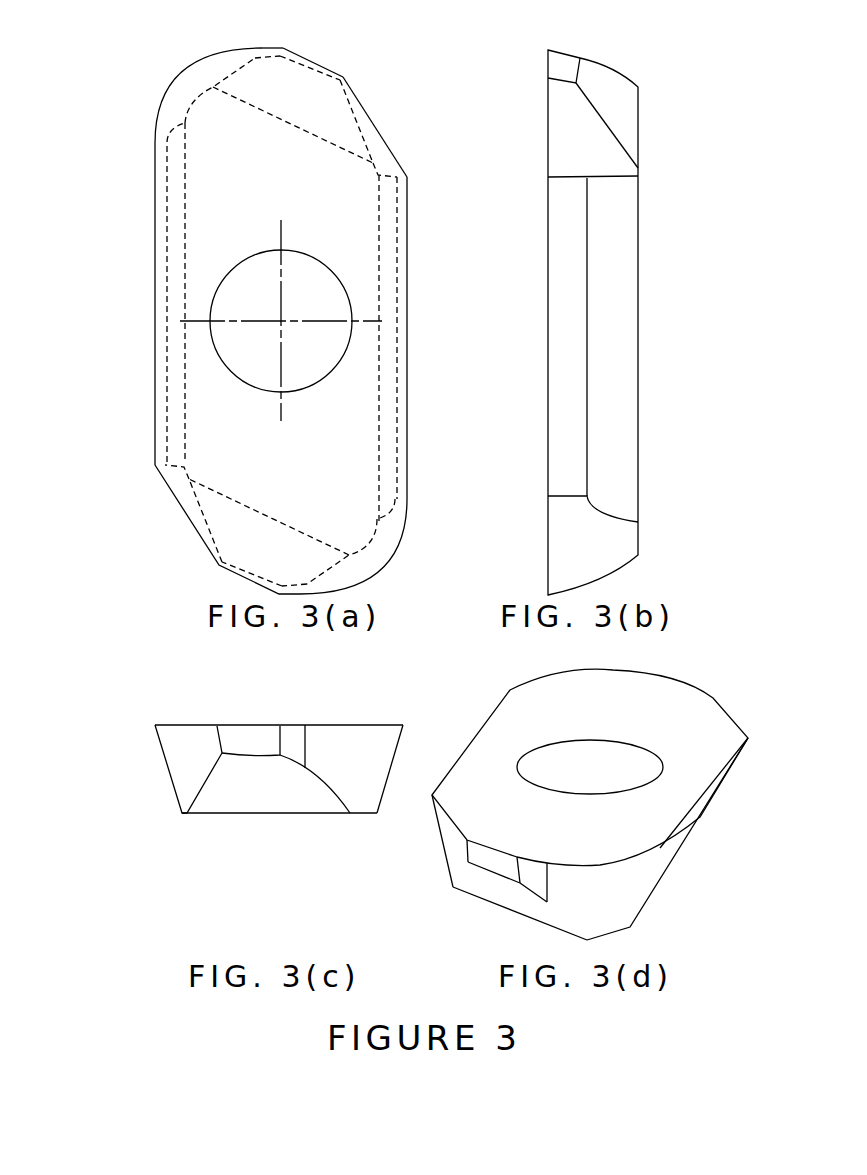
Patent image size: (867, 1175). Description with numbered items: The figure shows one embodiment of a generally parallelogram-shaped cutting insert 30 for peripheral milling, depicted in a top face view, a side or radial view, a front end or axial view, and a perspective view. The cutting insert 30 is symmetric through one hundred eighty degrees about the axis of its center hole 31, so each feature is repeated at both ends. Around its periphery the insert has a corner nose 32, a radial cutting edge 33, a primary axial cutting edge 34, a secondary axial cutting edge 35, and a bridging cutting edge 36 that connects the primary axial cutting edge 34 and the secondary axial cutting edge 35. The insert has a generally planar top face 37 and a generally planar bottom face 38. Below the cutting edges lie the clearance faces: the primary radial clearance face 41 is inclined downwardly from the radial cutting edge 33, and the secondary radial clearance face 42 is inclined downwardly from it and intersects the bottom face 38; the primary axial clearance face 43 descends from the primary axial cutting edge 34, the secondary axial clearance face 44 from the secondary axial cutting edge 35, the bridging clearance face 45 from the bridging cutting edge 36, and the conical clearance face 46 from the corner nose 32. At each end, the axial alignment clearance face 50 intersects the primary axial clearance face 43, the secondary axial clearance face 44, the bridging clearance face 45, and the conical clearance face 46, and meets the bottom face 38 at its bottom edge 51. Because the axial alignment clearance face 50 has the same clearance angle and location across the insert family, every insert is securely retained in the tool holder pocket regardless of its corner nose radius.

In FIG. 3A, the cutting insert 30 is at (137, 542).
In FIG. 3A, the center hole 31 is at (307, 353).
In FIG. 3D, the center hole 31 is at (597, 765).
In FIG. 3A, the corner nose 32 is at (183, 74).
In FIG. 3A, the radial cutting edge 33 is at (154, 235).
In FIG. 3A, the primary axial cutting edge 34 is at (273, 46).
In FIG. 3A, the secondary axial cutting edge 35 is at (375, 118).
In FIG. 3A, the bridging cutting edge 36 is at (330, 65).
In FIG. 3C, the top face 37 is at (357, 718).
In FIG. 3D, the top face 37 is at (527, 717).
In FIG. 3A, the bottom face 38 is at (340, 245).
In FIG. 3B, the bottom face 38 is at (639, 380).
In FIG. 3C, the bottom face 38 is at (298, 818).
In FIG. 3A, the primary radial clearance face 41 is at (163, 268).
In FIG. 3B, the primary radial clearance face 41 is at (568, 297).
In FIG. 3A, the secondary radial clearance face 42 is at (175, 357).
In FIG. 3B, the secondary radial clearance face 42 is at (610, 265).
In FIG. 3A, the primary axial clearance face 43 is at (262, 55).
In FIG. 3C, the primary axial clearance face 43 is at (297, 737).
In FIG. 3D, the primary axial clearance face 43 is at (533, 873).
In FIG. 3A, the secondary axial clearance face 44 is at (383, 162).
In FIG. 3C, the secondary axial clearance face 44 is at (188, 748).
In FIG. 3D, the secondary axial clearance face 44 is at (455, 842).
In FIG. 3A, the bridging clearance face 45 is at (302, 63).
In FIG. 3C, the bridging clearance face 45 is at (248, 738).
In FIG. 3D, the bridging clearance face 45 is at (473, 867).
In FIG. 3A, the conical clearance face 46 is at (177, 108).
In FIG. 3C, the conical clearance face 46 is at (355, 757).
In FIG. 3D, the conical clearance face 46 is at (607, 898).
In FIG. 3A, the axial alignment clearance face 50 is at (284, 106).
In FIG. 3C, the axial alignment clearance face 50 is at (255, 783).
In FIG. 3D, the axial alignment clearance face 50 is at (500, 890).
In FIG. 3A, the bottom edge 51 is at (316, 143).